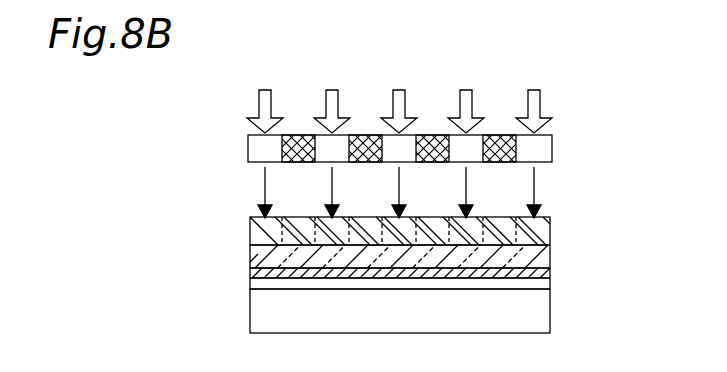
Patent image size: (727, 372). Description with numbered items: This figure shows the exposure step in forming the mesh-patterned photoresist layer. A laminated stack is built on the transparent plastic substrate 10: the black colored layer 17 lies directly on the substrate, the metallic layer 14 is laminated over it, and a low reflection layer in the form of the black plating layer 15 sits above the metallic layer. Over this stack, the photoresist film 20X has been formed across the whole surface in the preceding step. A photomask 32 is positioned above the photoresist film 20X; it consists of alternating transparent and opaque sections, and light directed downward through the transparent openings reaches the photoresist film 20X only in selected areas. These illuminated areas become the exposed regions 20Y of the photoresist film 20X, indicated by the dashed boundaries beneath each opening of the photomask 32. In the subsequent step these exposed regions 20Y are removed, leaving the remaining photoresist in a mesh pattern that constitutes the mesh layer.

The photomask 32 is at (545, 148).
The photoresist film 20X is at (543, 231).
The regions which had undergone the exposure 20Y is at (362, 224).
The black plating layer 15 is at (545, 257).
The metallic layer 14 is at (545, 273).
The black colored layer 17 is at (545, 283).
The transparent plastic substrate 10 is at (545, 312).